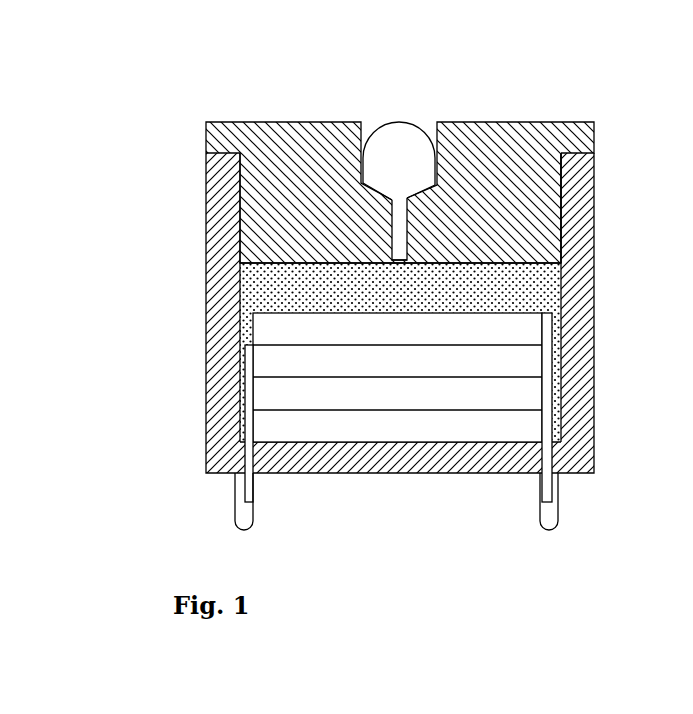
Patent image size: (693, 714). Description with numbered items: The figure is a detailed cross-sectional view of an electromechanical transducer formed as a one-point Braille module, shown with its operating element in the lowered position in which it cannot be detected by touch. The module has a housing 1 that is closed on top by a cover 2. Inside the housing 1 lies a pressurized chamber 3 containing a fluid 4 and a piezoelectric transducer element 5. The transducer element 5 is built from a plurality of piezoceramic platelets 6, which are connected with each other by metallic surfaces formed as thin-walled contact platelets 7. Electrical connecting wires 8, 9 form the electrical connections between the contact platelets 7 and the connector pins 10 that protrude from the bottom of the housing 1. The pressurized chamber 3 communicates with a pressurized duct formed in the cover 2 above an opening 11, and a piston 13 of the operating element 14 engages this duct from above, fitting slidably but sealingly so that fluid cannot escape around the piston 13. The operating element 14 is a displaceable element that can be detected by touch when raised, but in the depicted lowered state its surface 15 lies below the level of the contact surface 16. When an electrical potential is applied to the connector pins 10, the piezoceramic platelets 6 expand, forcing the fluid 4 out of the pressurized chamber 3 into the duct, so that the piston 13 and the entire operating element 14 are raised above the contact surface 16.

The housing 1 is at (207, 299).
The cover 2 is at (273, 232).
The pressurized chamber 3 is at (547, 279).
The fluid 4 is at (520, 277).
The piezoelectric transducer element 5 is at (530, 423).
The piezoceramic platelets 6 is at (502, 425).
The contact platelets 7 is at (283, 315).
The electrical connecting wire 8 is at (207, 452).
The electrical connecting wire 9 is at (587, 390).
The connector pins 10 is at (550, 510).
The opening 11 is at (405, 263).
The piston 13 is at (397, 221).
The operating element 14 is at (385, 162).
The surface 15 is at (408, 120).
The contact surface 16 is at (278, 120).